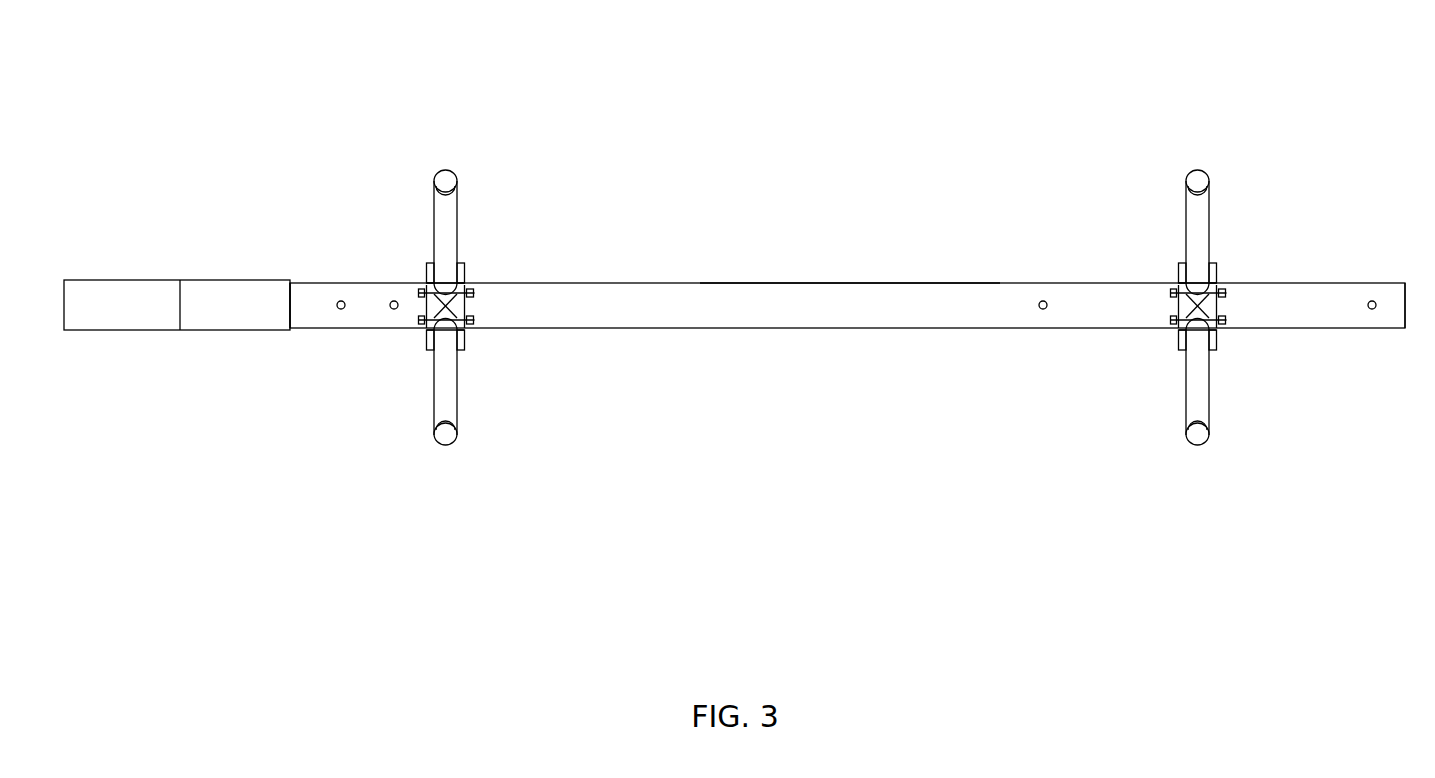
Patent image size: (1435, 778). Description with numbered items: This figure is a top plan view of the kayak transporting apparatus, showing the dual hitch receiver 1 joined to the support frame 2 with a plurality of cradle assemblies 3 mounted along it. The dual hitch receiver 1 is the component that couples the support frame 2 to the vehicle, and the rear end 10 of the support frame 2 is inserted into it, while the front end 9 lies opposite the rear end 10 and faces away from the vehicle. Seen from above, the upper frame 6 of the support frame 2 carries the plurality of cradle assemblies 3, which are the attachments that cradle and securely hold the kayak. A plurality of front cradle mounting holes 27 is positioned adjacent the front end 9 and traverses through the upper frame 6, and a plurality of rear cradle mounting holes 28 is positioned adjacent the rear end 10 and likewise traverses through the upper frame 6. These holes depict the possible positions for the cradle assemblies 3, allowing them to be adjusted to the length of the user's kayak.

The dual hitch receiver 1 is at (80, 312).
The support frame 2 is at (731, 222).
The plurality of cradle assemblies 3 is at (410, 258).
The upper frame 6 is at (908, 295).
The front end 9 is at (1396, 339).
The rear end 10 is at (309, 358).
The plurality of front cradle mounting holes 27 is at (1043, 299).
The plurality of rear cradle mounting holes 28 is at (342, 299).